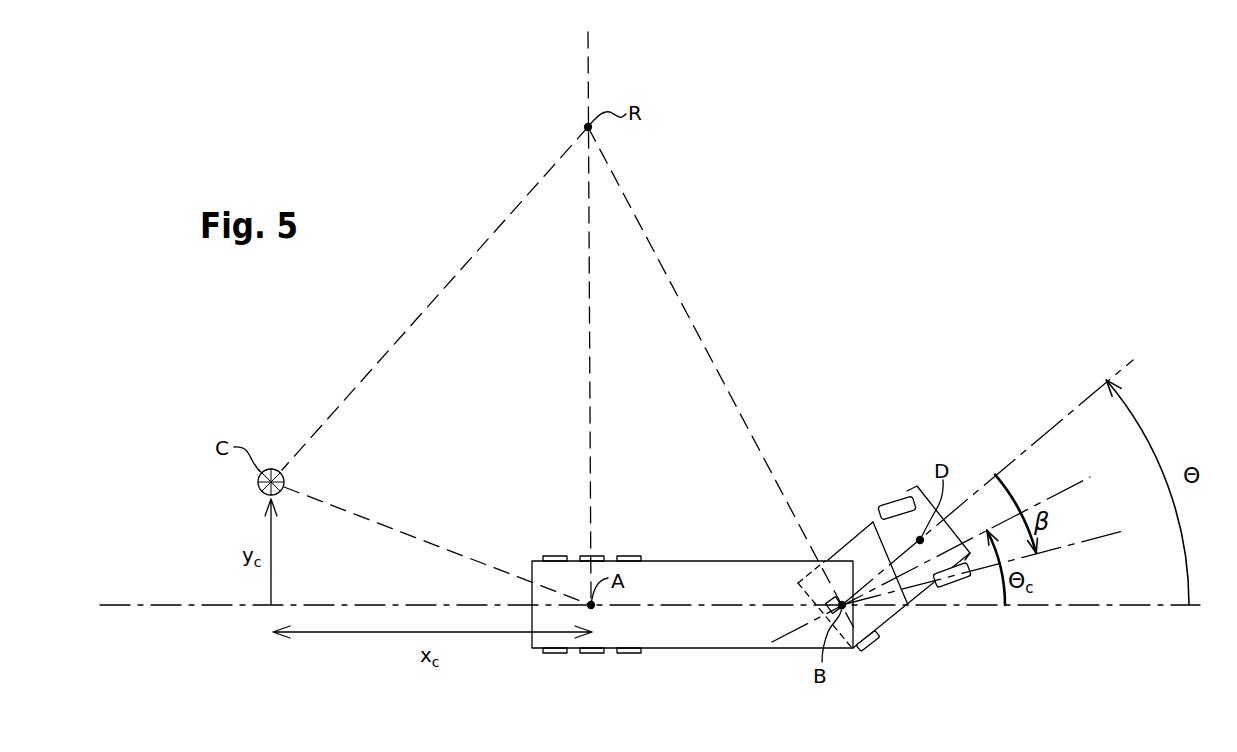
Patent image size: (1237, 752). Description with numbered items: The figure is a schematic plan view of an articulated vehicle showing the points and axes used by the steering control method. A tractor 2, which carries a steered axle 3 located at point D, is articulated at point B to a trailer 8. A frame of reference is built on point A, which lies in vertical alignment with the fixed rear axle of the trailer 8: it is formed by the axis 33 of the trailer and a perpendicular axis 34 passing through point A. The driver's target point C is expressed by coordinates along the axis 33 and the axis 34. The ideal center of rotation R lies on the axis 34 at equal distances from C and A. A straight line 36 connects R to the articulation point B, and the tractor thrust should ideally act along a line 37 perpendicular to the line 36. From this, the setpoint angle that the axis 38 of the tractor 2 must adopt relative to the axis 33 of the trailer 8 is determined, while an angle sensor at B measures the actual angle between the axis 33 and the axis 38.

The tractor 2 is at (873, 522).
The axle 3 is at (895, 500).
The trailer 8 is at (780, 650).
The axis of the trailer 33 is at (680, 605).
The perpendicular axis 34 is at (591, 437).
The straight line 36 is at (713, 362).
The line 37 is at (1067, 486).
The axis of the tractor 38 is at (1040, 439).